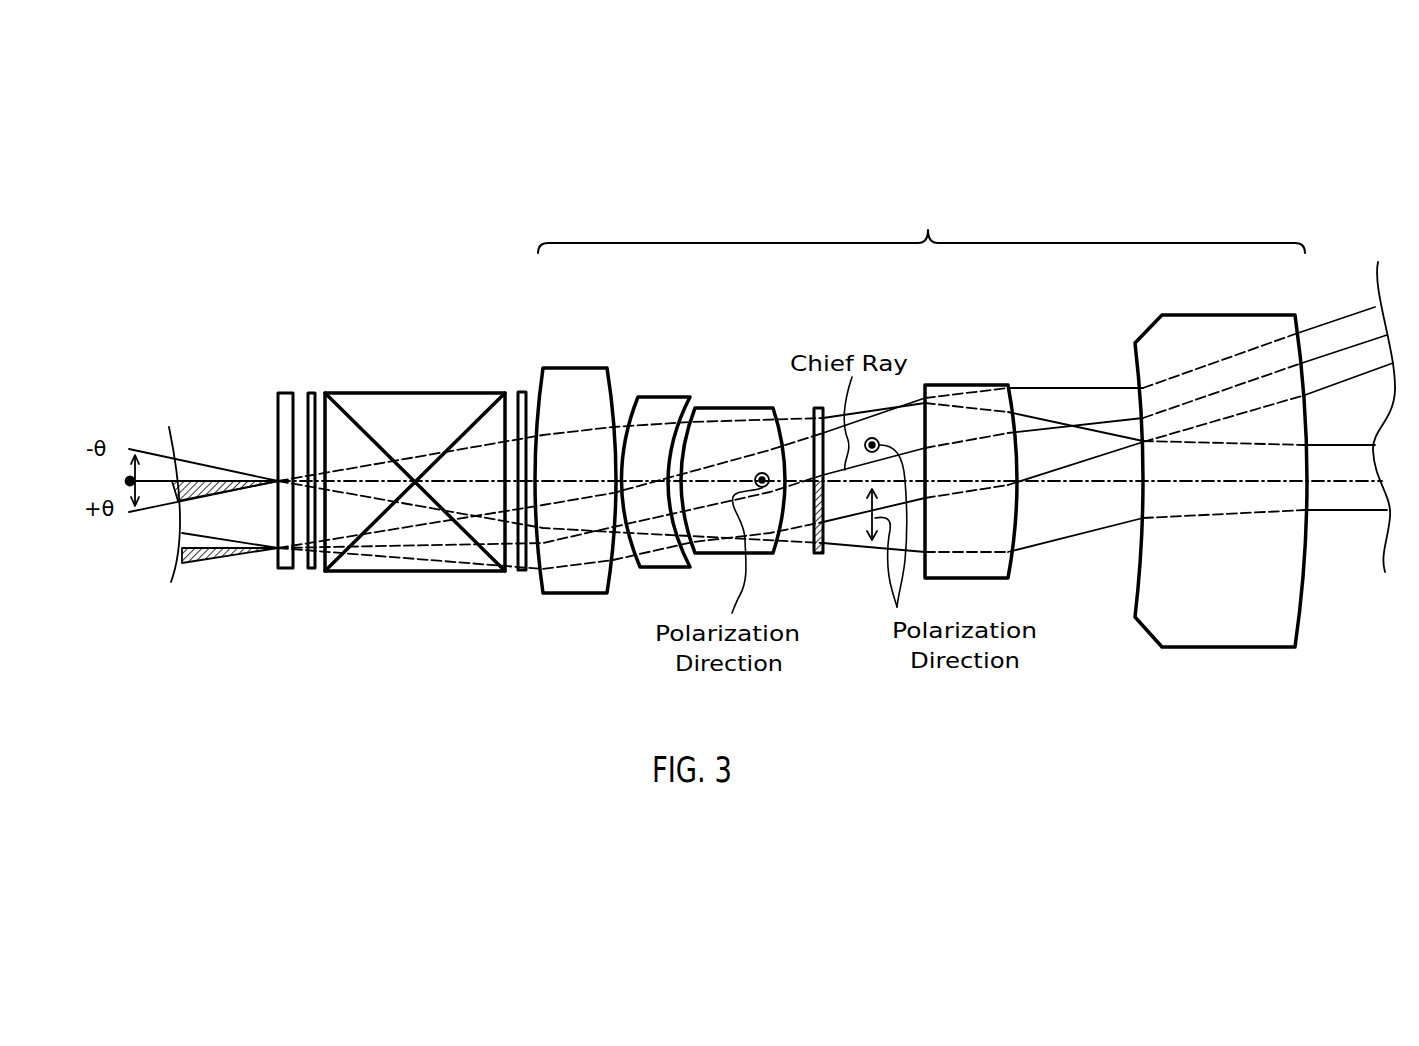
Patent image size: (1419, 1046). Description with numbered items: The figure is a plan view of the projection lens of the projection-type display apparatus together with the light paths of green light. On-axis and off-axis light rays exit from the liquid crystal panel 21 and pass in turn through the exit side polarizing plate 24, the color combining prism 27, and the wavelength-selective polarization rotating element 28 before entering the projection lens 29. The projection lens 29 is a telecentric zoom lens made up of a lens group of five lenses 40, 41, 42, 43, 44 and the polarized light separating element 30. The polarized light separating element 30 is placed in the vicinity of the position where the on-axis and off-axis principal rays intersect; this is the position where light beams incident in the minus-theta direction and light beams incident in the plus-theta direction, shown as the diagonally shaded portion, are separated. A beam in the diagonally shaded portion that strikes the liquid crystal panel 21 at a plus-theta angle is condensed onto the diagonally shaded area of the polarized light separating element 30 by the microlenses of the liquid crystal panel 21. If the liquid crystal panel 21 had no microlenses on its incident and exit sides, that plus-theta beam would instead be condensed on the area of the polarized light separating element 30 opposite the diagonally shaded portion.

The liquid crystal panel 21 is at (283, 393).
The exit side polarizing plate 24 is at (311, 568).
The color combining prism 27 is at (413, 571).
The wavelength-selective polarization rotating element 28 is at (520, 392).
The projection lens 29 is at (921, 229).
The polarized light separating element 30 is at (818, 553).
The lens 40 is at (578, 368).
The lens 41 is at (663, 397).
The lens 42 is at (725, 408).
The lens 43 is at (952, 385).
The lens 44 is at (1181, 315).